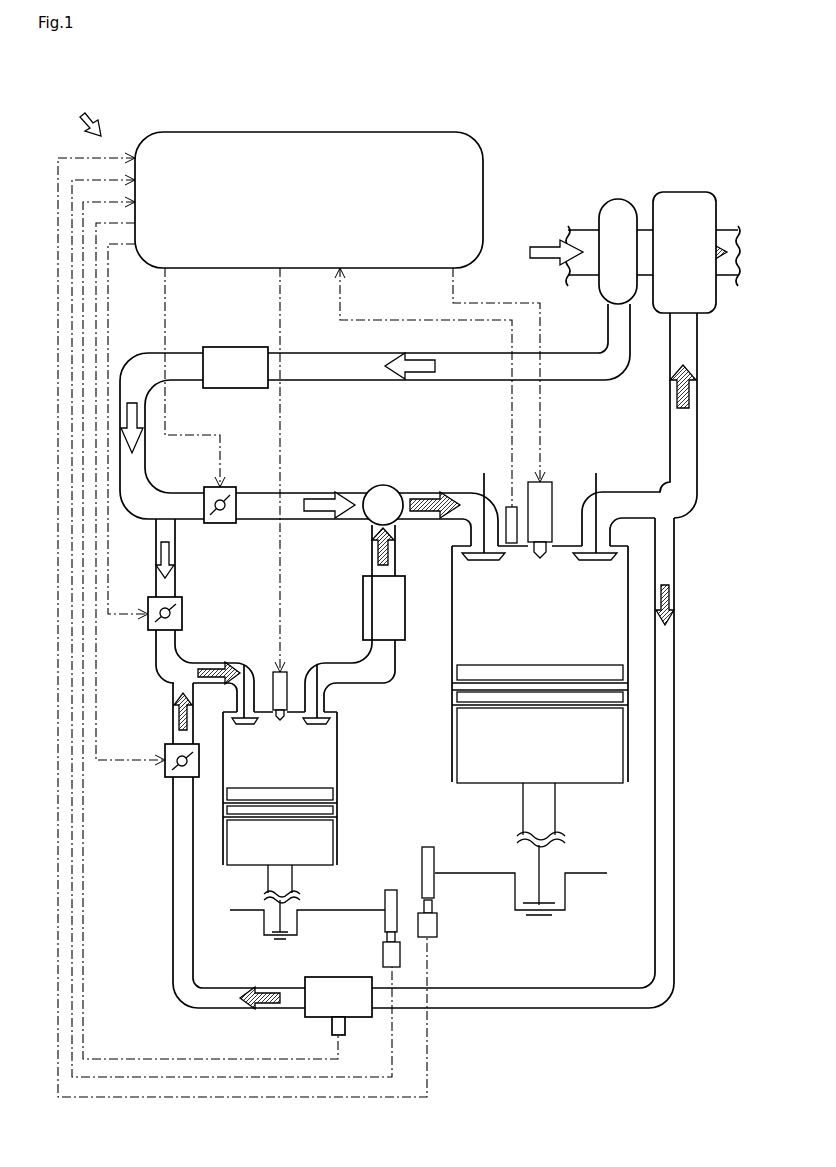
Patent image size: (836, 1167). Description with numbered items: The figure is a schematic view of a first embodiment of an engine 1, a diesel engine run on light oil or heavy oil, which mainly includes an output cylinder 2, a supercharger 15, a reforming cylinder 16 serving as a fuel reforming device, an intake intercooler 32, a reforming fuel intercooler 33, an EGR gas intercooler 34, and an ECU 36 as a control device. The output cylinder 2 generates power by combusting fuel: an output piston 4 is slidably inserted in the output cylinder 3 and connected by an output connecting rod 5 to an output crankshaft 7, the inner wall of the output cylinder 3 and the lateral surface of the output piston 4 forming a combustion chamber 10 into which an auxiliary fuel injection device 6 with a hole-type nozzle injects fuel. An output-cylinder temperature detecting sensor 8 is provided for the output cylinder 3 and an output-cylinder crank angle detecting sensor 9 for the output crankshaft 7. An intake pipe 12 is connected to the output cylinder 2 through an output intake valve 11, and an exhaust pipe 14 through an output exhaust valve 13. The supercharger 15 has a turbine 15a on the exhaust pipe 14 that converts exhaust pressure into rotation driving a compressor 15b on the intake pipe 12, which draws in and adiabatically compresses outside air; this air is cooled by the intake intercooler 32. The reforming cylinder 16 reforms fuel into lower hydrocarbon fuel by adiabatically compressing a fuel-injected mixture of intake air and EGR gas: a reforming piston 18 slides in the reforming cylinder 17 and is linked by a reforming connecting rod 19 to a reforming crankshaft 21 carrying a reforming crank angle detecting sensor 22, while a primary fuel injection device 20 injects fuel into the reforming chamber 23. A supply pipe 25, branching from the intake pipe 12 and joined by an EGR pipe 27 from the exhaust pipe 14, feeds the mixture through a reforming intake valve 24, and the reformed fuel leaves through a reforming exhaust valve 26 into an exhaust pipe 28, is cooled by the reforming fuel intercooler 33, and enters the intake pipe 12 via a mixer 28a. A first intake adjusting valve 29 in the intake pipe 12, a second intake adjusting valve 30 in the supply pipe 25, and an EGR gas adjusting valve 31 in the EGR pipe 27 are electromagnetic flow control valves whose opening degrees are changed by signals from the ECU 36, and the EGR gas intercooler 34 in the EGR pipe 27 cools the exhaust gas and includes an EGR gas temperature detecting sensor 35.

The engine 1 is at (82, 117).
The output cylinder 2 is at (523, 677).
The output cylinder 3 is at (523, 664).
The output piston 4 is at (466, 756).
The output connecting rod 5 is at (546, 812).
The auxiliary fuel injection device 6 is at (552, 489).
The output crankshaft 7 is at (601, 880).
The output-cylinder temperature detecting sensor 8 is at (507, 504).
The output-cylinder crank angle detecting sensor 9 is at (437, 925).
The combustion chamber 10 is at (549, 630).
The output intake valve 11 is at (484, 562).
The intake pipe 12 is at (402, 492).
The output exhaust valve 13 is at (596, 562).
The exhaust pipe 14 is at (675, 445).
The supercharger 15 is at (635, 210).
The turbine 15a is at (700, 193).
The compressor 15b is at (619, 199).
The reforming cylinder 16 is at (311, 778).
The reforming cylinder 17 is at (297, 788).
The reforming piston 18 is at (329, 838).
The reforming connecting rod 19 is at (288, 882).
The primary fuel injection device 20 is at (274, 672).
The reforming crankshaft 21 is at (238, 915).
The reforming crank angle detecting sensor 22 is at (383, 954).
The reforming chamber 23 is at (291, 782).
The reforming intake valve 24 is at (244, 726).
The supply pipe 25 is at (156, 542).
The reforming exhaust valve 26 is at (316, 726).
The EGR pipe 27 is at (173, 858).
The exhaust pipe 28 is at (376, 688).
The mixer 28a is at (368, 490).
The first intake adjusting valve 29 is at (236, 490).
The second intake adjusting valve 30 is at (150, 630).
The EGR gas adjusting valve 31 is at (165, 777).
The intake intercooler 32 is at (232, 347).
The reforming fuel intercooler 33 is at (405, 600).
The EGR gas intercooler 34 is at (318, 977).
The EGR gas temperature detecting sensor 35 is at (332, 1029).
The ECU 36 is at (479, 181).